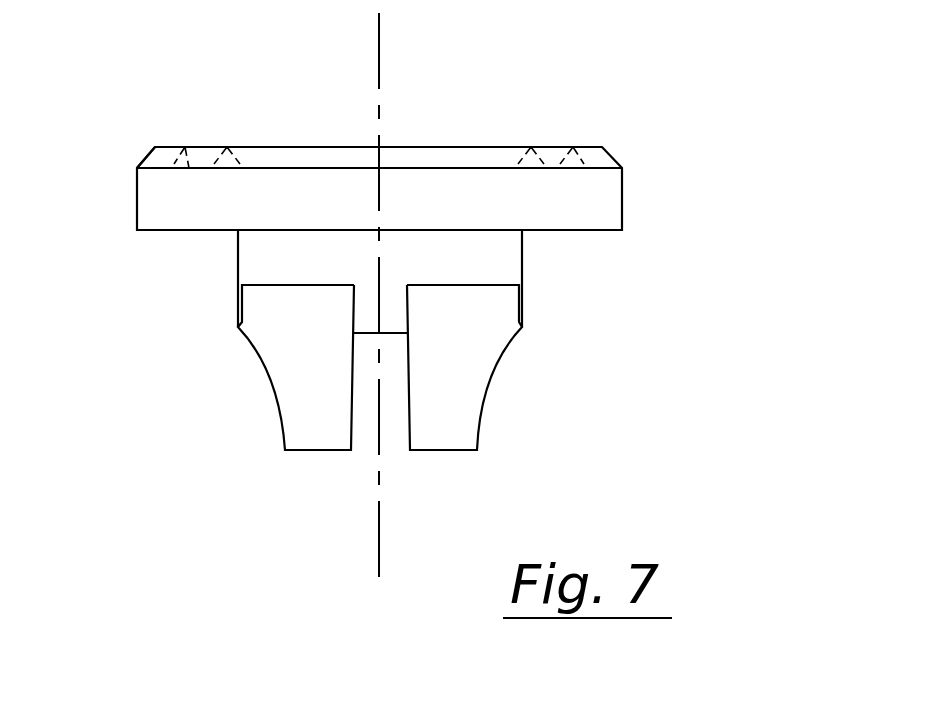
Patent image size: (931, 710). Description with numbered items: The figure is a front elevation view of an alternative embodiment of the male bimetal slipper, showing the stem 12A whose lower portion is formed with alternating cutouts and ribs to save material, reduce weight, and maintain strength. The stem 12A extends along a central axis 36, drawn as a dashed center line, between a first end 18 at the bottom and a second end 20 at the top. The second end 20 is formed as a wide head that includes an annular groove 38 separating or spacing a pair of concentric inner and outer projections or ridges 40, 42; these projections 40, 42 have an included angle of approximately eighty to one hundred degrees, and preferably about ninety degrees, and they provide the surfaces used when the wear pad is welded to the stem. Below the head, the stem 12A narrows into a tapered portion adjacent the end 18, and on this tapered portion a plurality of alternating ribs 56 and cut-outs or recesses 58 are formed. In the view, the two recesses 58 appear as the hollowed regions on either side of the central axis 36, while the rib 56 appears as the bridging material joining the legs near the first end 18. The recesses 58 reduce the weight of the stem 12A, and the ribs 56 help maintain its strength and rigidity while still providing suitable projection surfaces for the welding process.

The stem 12A is at (647, 127).
The second end 20 is at (468, 147).
The outer projection 42 is at (153, 147).
The annular groove 38 is at (185, 147).
The inner projection 40 is at (227, 147).
The central axis 36 is at (379, 77).
The recesses 58 is at (313, 360).
The first end 18 is at (320, 450).
The ribs 56 is at (395, 433).